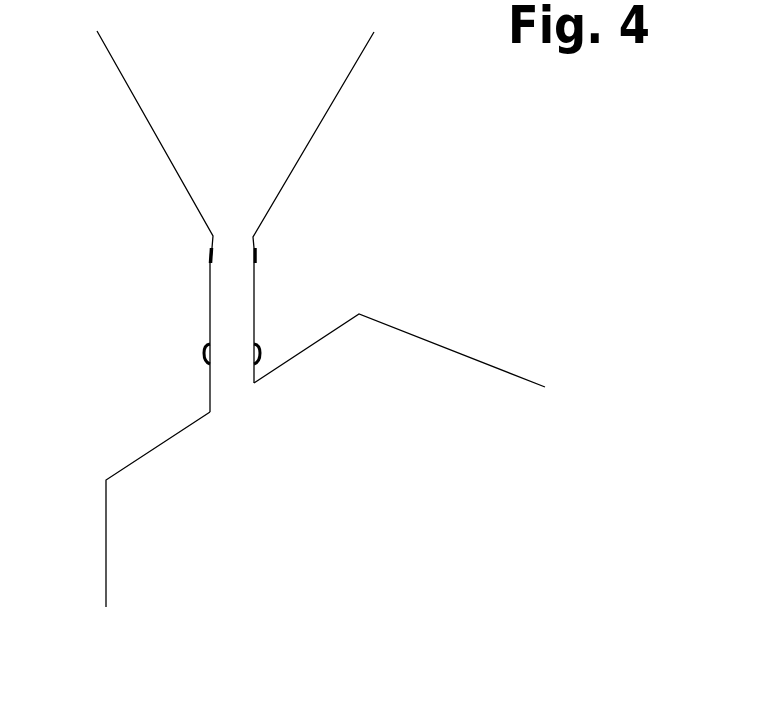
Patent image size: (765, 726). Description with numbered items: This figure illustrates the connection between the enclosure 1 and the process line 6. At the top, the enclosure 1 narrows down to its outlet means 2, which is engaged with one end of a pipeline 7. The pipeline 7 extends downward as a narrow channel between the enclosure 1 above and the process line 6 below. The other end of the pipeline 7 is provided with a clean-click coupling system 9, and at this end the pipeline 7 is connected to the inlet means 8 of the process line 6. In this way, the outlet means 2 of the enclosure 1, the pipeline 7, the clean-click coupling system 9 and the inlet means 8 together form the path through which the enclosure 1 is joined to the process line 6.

The enclosure 1 is at (235, 139).
The outlet means 2 is at (208, 253).
The process line 6 is at (325, 460).
The pipeline 7 is at (232, 337).
The inlet means 8 is at (207, 386).
The clean-click coupling system 9 is at (270, 342).